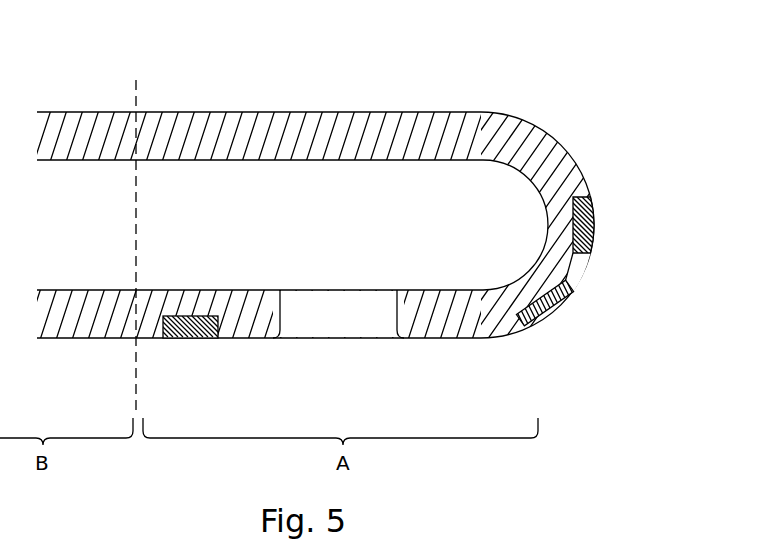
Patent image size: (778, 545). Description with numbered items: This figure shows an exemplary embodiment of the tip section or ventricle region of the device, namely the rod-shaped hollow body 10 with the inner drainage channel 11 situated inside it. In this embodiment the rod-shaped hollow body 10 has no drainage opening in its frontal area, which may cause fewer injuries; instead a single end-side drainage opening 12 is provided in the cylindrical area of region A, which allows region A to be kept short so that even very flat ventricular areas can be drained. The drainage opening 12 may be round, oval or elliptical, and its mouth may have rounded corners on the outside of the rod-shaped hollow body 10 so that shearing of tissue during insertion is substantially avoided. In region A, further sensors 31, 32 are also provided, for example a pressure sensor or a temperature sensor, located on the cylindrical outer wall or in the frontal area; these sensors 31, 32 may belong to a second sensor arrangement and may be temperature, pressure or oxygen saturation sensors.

The rod-shaped hollow body 10 is at (375, 217).
The inner drainage channel 11 is at (475, 184).
The drainage opening 12 is at (335, 325).
The sensor 31 is at (183, 325).
The sensor 32 is at (593, 217).